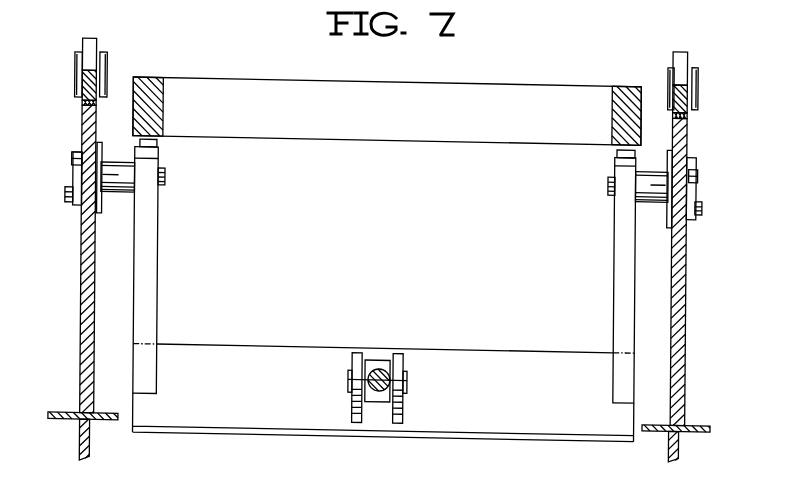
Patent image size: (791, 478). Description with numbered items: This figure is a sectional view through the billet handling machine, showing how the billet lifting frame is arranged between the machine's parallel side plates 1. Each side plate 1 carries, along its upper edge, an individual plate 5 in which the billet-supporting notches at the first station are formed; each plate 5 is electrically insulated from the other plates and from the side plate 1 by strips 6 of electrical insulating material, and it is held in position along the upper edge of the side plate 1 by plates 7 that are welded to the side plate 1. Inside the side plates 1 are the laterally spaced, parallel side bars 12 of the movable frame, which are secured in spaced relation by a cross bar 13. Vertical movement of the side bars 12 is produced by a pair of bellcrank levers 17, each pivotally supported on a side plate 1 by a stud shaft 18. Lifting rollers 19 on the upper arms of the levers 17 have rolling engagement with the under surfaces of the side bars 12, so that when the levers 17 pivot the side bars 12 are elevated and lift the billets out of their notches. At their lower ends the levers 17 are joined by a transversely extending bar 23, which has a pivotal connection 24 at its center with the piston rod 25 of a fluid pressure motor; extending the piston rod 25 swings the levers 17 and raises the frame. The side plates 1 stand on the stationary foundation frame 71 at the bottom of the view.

The side plates 1 is at (80, 248).
The plates 5 is at (87, 91).
The strips of electrical insulating material 6 is at (89, 113).
The plates 7 is at (74, 66).
The side bars 12 is at (164, 106).
The cross bar 13 is at (232, 85).
The levers 17 is at (157, 252).
The stud shafts 18 is at (162, 182).
The lifting rollers 19 is at (157, 148).
The bar 23 is at (253, 348).
The pivotal connection 24 is at (408, 380).
The piston rod 25 is at (349, 380).
The foundation frame 71 is at (73, 424).